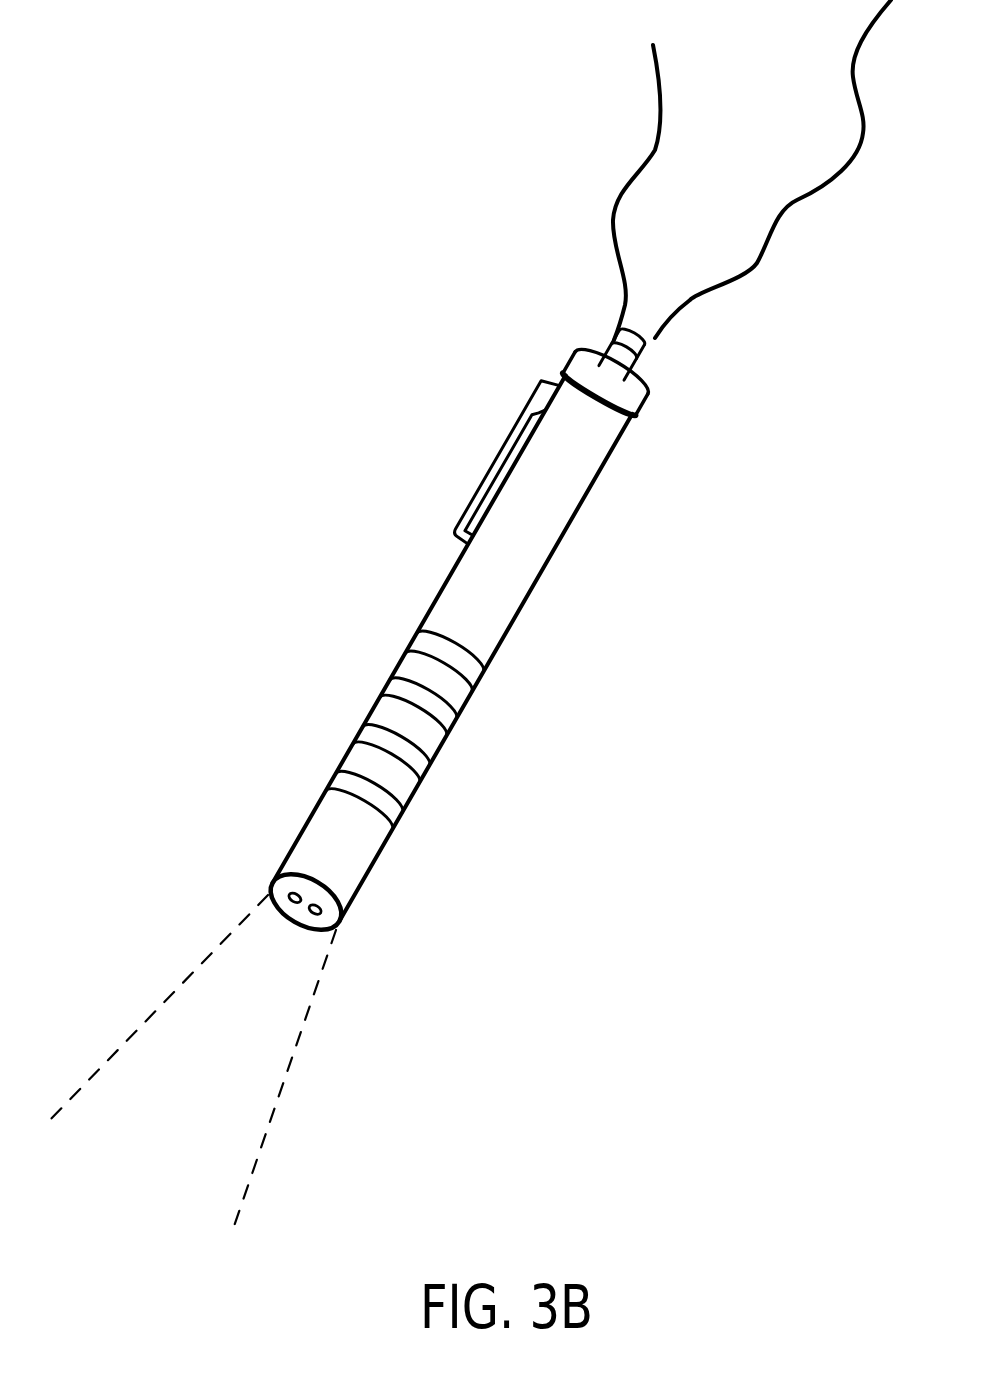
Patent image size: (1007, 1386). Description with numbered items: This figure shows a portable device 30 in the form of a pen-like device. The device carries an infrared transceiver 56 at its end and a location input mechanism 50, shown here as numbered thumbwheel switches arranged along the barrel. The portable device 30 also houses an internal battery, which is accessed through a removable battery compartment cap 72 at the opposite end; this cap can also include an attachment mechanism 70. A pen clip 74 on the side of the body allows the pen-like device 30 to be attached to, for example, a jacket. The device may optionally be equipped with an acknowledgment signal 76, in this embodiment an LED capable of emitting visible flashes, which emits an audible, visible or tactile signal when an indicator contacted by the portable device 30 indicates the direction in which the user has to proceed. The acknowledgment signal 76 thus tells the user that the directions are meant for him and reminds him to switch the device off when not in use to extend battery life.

The portable device 30 is at (243, 308).
The location input mechanism 50 is at (332, 775).
The infrared transceiver 56 is at (308, 915).
The attachment mechanism 70 is at (662, 363).
The removable battery compartment cap 72 is at (640, 405).
The pen clip 74 is at (497, 467).
The acknowledgment signal 76 is at (350, 855).